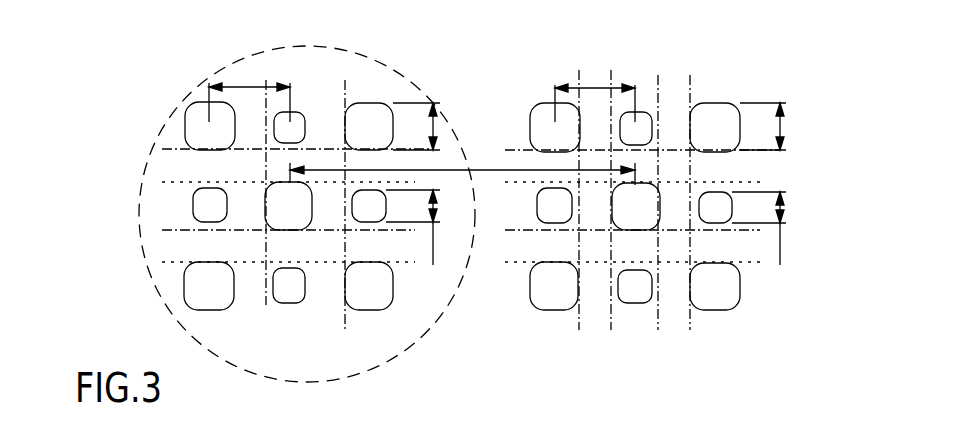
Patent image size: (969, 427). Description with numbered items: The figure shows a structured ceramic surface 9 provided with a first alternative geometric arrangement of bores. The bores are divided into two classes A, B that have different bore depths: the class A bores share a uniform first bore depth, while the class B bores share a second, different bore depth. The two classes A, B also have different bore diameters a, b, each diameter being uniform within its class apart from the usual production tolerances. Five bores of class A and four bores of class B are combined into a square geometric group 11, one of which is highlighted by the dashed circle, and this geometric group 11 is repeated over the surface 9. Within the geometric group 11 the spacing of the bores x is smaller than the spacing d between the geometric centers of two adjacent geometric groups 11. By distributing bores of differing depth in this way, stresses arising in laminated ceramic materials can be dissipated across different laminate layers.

The surface 9 is at (488, 67).
The geometric group 11 is at (163, 128).
The class A bores A is at (462, 206).
The class B bores B is at (542, 206).
The spacing of the bores x is at (422, 94).
The bore diameter of class A a is at (593, 126).
The bore diameter of class B b is at (590, 227).
The spacing of the geometric centers d is at (462, 165).